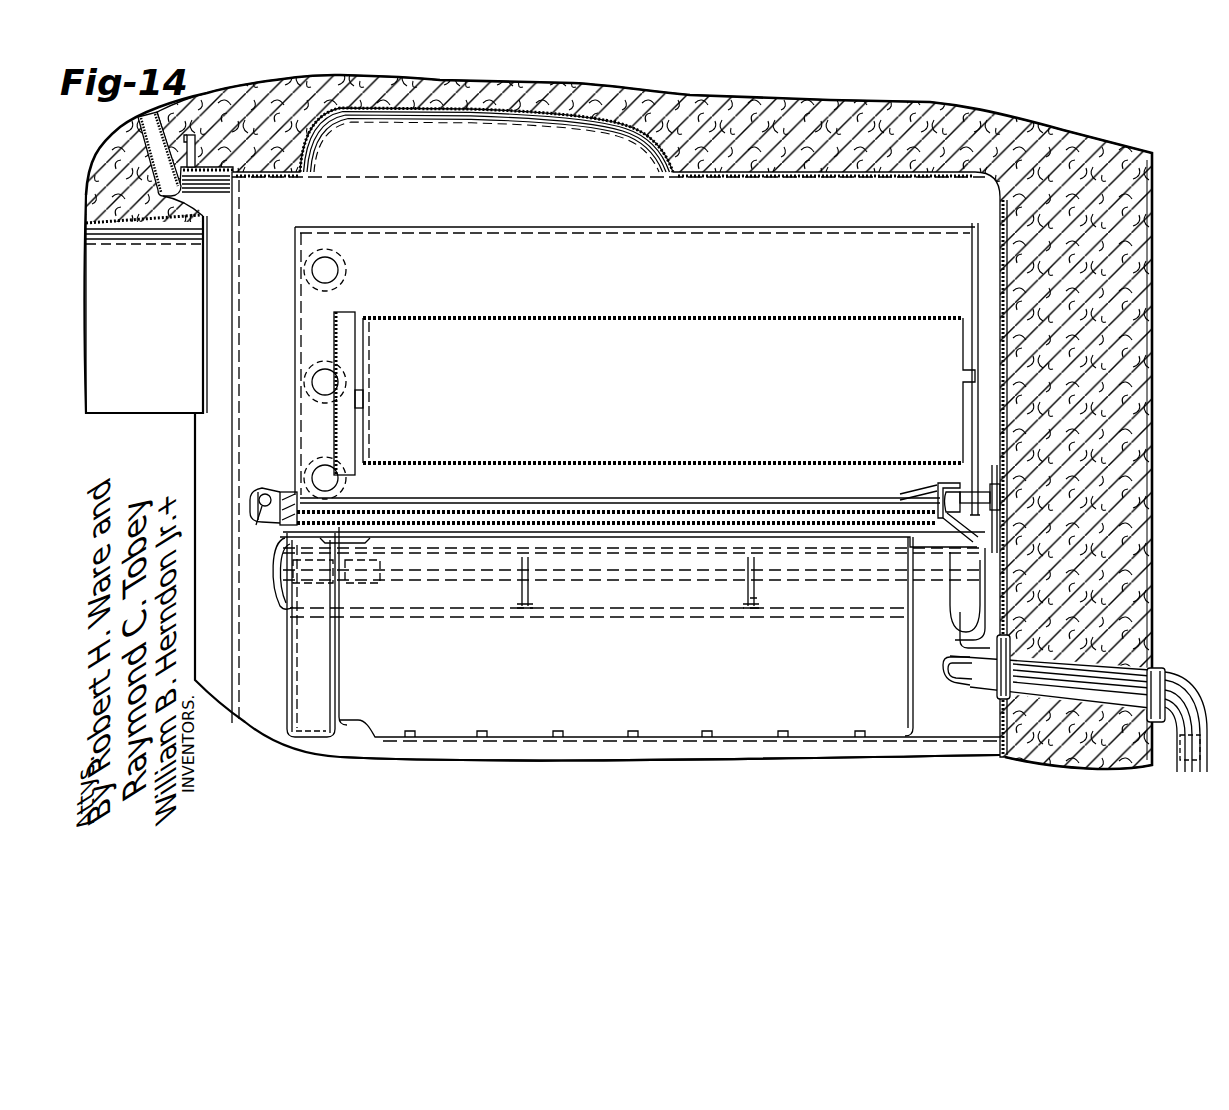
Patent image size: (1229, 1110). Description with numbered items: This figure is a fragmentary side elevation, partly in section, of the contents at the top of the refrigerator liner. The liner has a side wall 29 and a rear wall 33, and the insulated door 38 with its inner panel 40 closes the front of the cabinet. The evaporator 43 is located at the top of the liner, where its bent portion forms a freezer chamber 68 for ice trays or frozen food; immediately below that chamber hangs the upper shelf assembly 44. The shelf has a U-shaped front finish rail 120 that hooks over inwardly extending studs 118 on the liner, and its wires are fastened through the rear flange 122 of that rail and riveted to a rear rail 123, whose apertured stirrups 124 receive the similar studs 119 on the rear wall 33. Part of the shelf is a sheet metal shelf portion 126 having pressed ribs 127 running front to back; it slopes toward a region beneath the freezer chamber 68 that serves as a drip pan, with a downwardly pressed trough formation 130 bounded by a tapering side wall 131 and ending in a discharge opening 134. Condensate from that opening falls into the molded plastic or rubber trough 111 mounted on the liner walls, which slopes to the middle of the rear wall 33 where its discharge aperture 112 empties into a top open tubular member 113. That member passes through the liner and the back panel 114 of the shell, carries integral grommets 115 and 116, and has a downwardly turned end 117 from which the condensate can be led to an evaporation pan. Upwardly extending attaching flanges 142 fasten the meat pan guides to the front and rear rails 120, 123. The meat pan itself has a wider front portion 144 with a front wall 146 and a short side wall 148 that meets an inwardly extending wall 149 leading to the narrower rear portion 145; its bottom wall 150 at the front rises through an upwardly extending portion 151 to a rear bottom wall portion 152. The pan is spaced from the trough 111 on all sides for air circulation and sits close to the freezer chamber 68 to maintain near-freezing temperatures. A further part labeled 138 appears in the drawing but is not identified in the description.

The side wall 29 is at (197, 434).
The rear wall 33 is at (1003, 416).
The insulated door 38 is at (118, 390).
The inner panel 40 is at (100, 290).
The evaporator 43 is at (326, 320).
The upper shelf assembly 44 is at (283, 486).
The freezer chamber 68 is at (388, 435).
The trough 111 is at (603, 560).
The discharge aperture 112 is at (686, 563).
The tubular member 113 is at (966, 674).
The back panel 114 is at (1152, 648).
The grommet 115 is at (1148, 684).
The grommet 116 is at (1153, 673).
The downwardly turned end 117 is at (1190, 758).
The stud 118 is at (270, 522).
The stud 119 is at (983, 489).
The front finish rail 120 is at (250, 495).
The rear flange 122 is at (272, 546).
The rear rail 123 is at (925, 489).
The apertured stirrup 124 is at (952, 485).
The sheet metal shelf portion 126 is at (642, 504).
The pressed rib 127 is at (610, 498).
The downwardly pressed formation 130 is at (783, 511).
The side wall 131 is at (715, 506).
The discharge opening 134 is at (962, 525).
The bottom wall 138 is at (680, 728).
The attaching flange 142 is at (276, 553).
The front portion 144 is at (292, 678).
The rear portion 145 is at (392, 737).
The front wall 146 is at (296, 703).
The side wall 148 is at (300, 721).
The inwardly extending wall 149 is at (338, 644).
The bottom wall 150 is at (303, 746).
The upwardly extending portion 151 is at (338, 742).
The rear bottom wall portion 152 is at (430, 745).